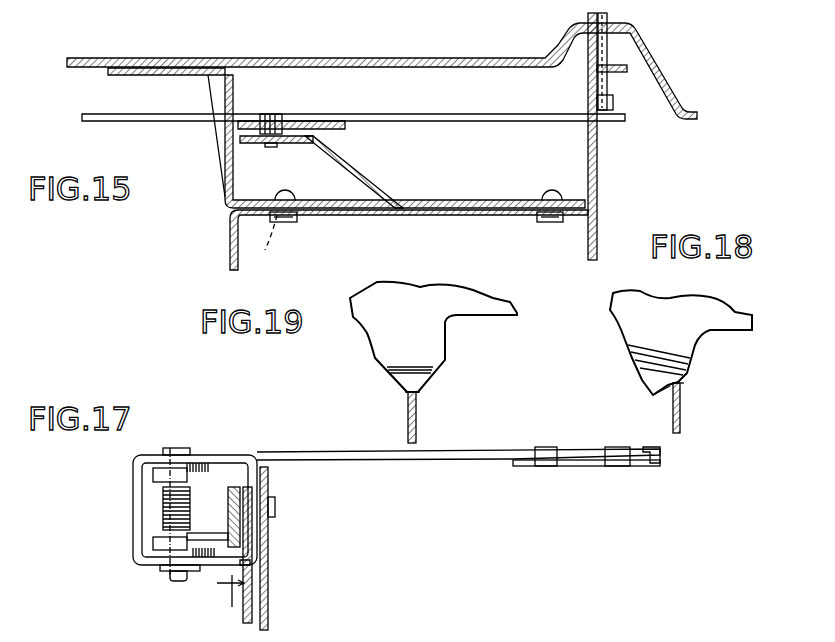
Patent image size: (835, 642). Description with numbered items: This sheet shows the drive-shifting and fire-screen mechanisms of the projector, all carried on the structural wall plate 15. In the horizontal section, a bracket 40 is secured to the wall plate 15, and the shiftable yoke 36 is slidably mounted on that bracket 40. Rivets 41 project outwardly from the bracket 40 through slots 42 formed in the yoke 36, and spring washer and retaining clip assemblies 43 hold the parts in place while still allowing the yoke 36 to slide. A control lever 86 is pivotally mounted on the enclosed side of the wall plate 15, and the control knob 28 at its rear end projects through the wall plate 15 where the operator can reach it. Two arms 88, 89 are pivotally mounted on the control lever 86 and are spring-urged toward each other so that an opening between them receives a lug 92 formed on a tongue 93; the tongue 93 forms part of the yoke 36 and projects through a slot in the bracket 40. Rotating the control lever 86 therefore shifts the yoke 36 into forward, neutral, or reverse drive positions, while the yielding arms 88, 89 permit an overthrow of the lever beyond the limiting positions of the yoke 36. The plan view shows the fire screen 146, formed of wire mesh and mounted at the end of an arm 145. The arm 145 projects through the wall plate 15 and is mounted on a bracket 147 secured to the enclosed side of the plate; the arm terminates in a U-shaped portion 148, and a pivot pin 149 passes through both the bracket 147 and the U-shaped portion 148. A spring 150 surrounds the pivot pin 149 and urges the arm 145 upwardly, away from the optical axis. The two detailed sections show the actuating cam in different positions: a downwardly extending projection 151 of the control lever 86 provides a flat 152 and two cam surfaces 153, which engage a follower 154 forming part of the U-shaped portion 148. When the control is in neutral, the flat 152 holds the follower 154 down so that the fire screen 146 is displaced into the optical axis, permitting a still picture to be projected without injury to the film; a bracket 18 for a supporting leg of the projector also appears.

In FIG. 15, the wall plate 15 is at (445, 58).
In FIG. 17, the wall plate 15 is at (268, 603).
In FIG. 15, the bracket 40 is at (190, 74).
In FIG. 15, the control lever 86 is at (468, 122).
In FIG. 15, the arm 88 is at (250, 121).
In FIG. 15, the arm 89 is at (337, 121).
In FIG. 15, the lug 92 is at (272, 114).
In FIG. 15, the tongue 93 is at (375, 182).
In FIG. 15, the control knob 28 is at (608, 87).
In FIG. 15, the yoke 36 is at (230, 245).
In FIG. 15, the rivets 41 is at (287, 222).
In FIG. 15, the spring washer and retaining clip assemblies 43 is at (300, 221).
In FIG. 15, the slots 42 is at (266, 245).
In FIG. 18, the projection 151 is at (635, 339).
In FIG. 19, the projection 151 is at (434, 339).
In FIG. 17, the projection 151 is at (243, 615).
In FIG. 18, the cam surfaces 153 is at (642, 377).
In FIG. 19, the cam surfaces 153 is at (427, 381).
In FIG. 18, the follower 154 is at (680, 381).
In FIG. 19, the follower 154 is at (420, 393).
In FIG. 17, the follower 154 is at (233, 563).
In FIG. 18, the flat 152 is at (653, 394).
In FIG. 19, the flat 152 is at (407, 394).
In FIG. 18, the U-shaped portion 148 is at (681, 424).
In FIG. 19, the U-shaped portion 148 is at (418, 426).
In FIG. 17, the U-shaped portion 148 is at (135, 530).
In FIG. 17, the bracket 147 is at (215, 468).
In FIG. 17, the spring 150 is at (160, 507).
In FIG. 17, the pivot pin 149 is at (167, 585).
In FIG. 17, the bracket 18 is at (218, 591).
In FIG. 17, the arm 145 is at (445, 460).
In FIG. 17, the fire screen 146 is at (590, 466).